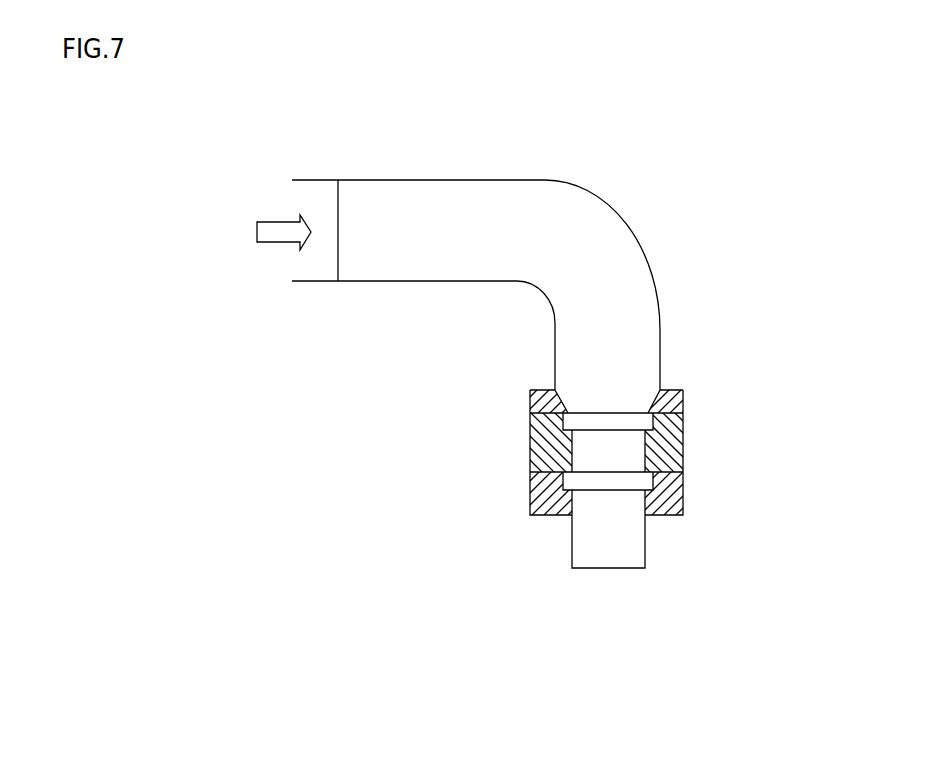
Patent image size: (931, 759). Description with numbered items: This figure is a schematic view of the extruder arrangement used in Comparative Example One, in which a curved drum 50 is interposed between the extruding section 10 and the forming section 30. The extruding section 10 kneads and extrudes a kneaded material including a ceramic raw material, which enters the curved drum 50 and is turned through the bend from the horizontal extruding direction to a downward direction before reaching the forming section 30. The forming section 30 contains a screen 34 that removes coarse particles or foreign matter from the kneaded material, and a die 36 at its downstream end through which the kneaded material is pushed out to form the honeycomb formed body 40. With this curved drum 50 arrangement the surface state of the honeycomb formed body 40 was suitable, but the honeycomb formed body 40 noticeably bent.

The extruding section 10 is at (307, 198).
The curved drum 50 is at (555, 207).
The forming section 30 is at (632, 460).
The screen 34 is at (647, 423).
The die 36 is at (643, 478).
The honeycomb formed body 40 is at (632, 533).